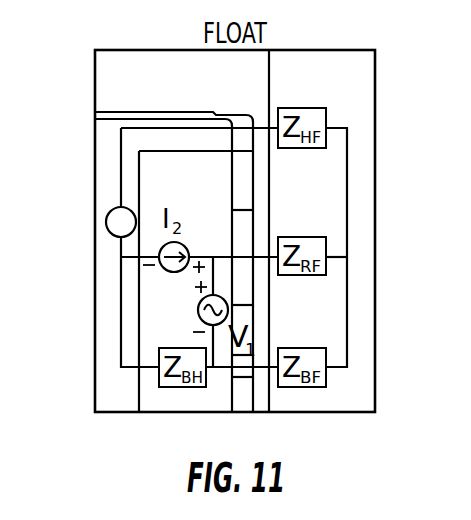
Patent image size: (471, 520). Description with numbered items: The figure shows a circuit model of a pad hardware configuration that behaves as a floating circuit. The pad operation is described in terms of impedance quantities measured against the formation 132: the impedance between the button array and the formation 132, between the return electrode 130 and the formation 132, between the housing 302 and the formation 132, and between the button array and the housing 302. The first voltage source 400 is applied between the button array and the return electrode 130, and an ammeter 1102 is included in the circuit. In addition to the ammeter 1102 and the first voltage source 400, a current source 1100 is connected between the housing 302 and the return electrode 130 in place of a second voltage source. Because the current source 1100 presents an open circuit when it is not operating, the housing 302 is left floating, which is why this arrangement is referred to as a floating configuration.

The formation 132 is at (366, 284).
The housing 302 is at (110, 145).
The return electrode 130 is at (256, 219).
The ammeter 1102 is at (106, 217).
The current source 1100 is at (159, 254).
The first voltage source 400 is at (198, 308).